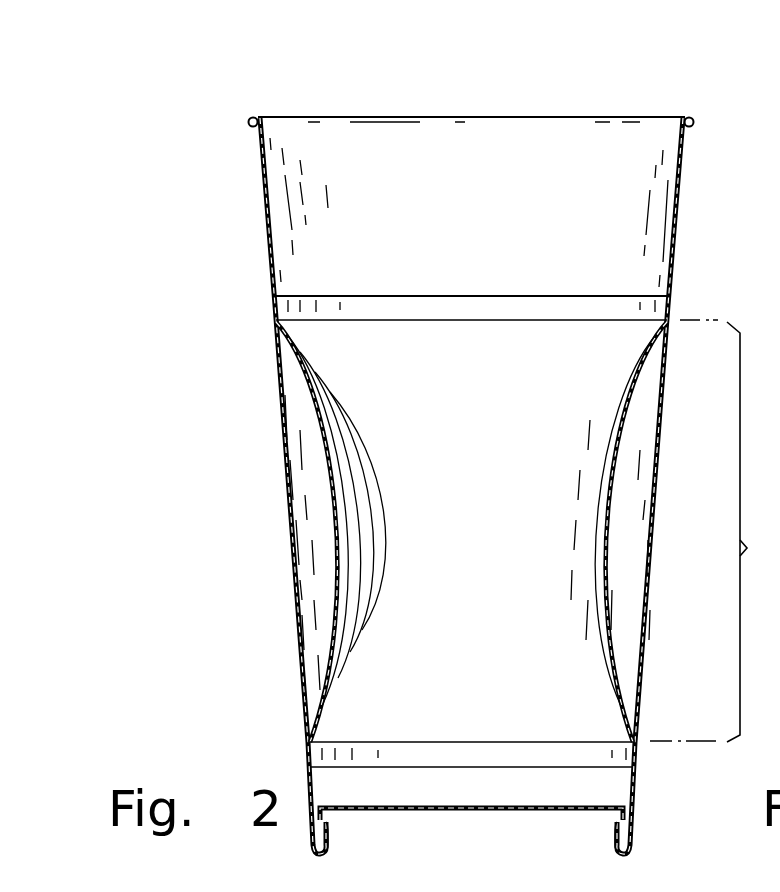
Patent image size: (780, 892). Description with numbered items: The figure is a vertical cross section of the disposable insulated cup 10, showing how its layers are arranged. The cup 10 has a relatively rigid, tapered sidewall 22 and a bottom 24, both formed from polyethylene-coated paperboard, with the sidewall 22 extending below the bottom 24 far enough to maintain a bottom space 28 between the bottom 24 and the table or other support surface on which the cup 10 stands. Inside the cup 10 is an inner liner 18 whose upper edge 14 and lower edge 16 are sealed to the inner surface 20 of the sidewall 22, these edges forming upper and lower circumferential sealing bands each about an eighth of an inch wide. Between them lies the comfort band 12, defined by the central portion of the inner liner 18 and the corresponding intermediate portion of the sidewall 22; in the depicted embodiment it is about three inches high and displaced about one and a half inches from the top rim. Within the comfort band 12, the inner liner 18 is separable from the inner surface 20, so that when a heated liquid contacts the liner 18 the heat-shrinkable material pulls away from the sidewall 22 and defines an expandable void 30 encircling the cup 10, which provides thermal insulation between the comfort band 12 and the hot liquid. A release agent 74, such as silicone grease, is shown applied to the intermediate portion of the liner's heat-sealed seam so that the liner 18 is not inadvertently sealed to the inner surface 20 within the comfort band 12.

The disposable insulated cup 10 is at (212, 117).
The comfort band 12 is at (715, 531).
The upper edge 14 is at (526, 306).
The lower edge 16 is at (531, 755).
The inner liner 18 is at (313, 397).
The inner surface 20 is at (310, 618).
The sidewall 22 is at (278, 427).
The bottom 24 is at (437, 803).
The bottom space 28 is at (494, 828).
The expandable void 30 is at (316, 552).
The release agent 74 is at (646, 382).